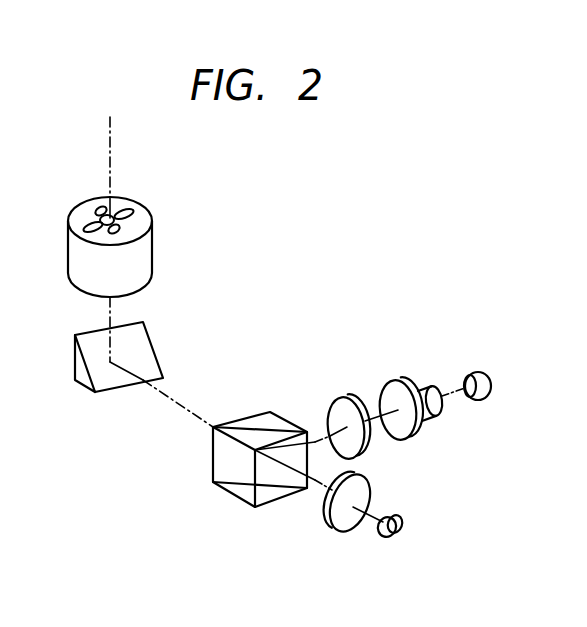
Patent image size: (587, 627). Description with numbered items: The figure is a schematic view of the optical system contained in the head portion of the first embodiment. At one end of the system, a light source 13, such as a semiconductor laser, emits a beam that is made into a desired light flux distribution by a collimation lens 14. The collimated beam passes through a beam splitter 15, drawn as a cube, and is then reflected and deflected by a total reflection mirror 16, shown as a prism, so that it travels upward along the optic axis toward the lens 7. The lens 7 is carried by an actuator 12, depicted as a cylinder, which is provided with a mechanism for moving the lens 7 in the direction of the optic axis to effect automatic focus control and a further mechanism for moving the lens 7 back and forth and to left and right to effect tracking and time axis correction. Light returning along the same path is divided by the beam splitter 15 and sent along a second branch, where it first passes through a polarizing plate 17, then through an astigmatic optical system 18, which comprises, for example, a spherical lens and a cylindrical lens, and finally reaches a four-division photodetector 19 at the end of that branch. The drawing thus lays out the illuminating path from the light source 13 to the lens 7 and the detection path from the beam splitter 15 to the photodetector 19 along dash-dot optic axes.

The lens 7 is at (100, 218).
The actuator 12 is at (152, 233).
The light source 13 is at (400, 512).
The collimation lens 14 is at (372, 485).
The beam splitter 15 is at (245, 417).
The total reflection mirror 16 is at (155, 348).
The polarizing plate 17 is at (345, 395).
The astigmatic optical system 18 is at (402, 380).
The four-division photodetector 19 is at (480, 372).